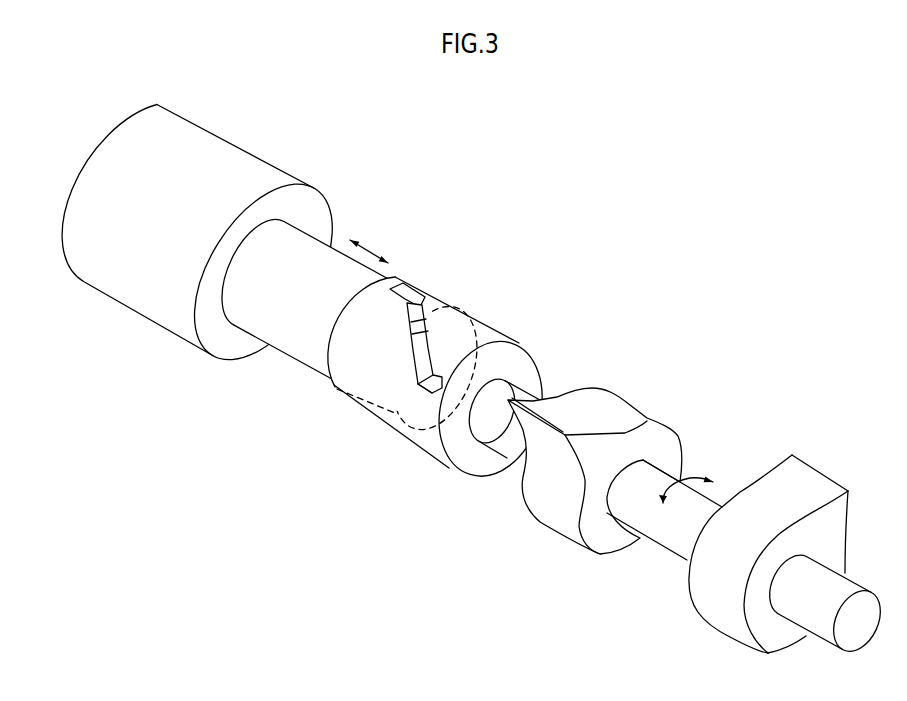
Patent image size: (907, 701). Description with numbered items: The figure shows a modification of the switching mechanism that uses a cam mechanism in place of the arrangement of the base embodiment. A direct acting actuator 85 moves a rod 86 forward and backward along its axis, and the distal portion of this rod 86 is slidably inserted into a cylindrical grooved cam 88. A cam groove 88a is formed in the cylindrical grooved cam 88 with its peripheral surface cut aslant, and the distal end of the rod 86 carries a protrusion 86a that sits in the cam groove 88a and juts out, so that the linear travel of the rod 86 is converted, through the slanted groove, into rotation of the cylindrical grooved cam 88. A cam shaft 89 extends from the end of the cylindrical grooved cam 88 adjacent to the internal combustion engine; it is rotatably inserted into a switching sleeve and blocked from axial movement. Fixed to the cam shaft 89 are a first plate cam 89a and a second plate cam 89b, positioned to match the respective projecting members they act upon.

The direct acting actuator 85 is at (196, 176).
The rod 86 is at (293, 327).
The protrusion 86a is at (415, 302).
The cylindrical grooved cam 88 is at (488, 338).
The cam groove 88a is at (404, 365).
The cam shaft 89 is at (663, 548).
The first plate cam 89a is at (773, 497).
The second plate cam 89b is at (613, 415).